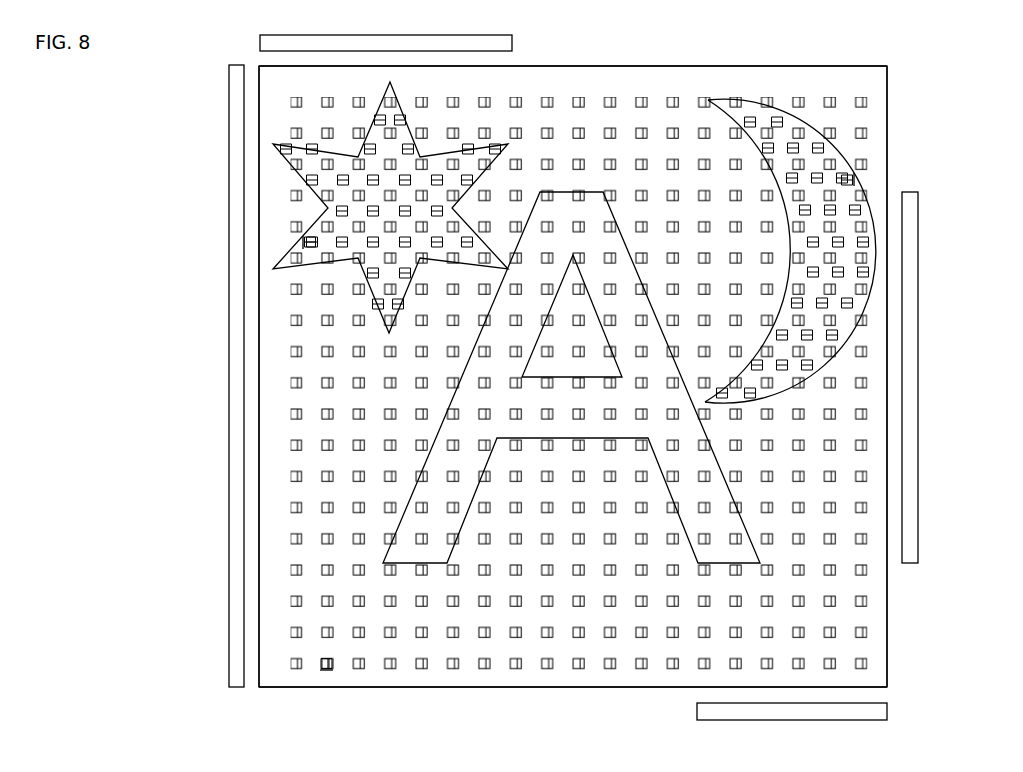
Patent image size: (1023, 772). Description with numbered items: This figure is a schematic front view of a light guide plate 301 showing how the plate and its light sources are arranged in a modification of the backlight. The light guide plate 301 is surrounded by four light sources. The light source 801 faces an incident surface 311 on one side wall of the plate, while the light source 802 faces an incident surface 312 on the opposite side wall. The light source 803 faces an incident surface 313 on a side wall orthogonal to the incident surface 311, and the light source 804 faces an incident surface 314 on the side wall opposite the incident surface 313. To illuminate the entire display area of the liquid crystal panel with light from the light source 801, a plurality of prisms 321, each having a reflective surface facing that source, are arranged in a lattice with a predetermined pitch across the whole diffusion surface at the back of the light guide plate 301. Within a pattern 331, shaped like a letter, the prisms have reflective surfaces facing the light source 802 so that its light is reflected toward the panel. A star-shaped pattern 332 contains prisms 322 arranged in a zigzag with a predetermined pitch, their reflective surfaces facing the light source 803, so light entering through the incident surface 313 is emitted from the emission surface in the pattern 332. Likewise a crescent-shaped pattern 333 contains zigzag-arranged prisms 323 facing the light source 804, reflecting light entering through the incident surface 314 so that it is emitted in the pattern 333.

The light guide plate 301 is at (887, 638).
The incident surface 311 is at (259, 681).
The incident surface 312 is at (888, 80).
The incident surface 313 is at (653, 66).
The incident surface 314 is at (514, 690).
The prisms 321 is at (327, 670).
The prisms 322 is at (304, 242).
The prisms 323 is at (852, 180).
The pattern 331 is at (698, 563).
The pattern 332 is at (298, 168).
The pattern 333 is at (840, 155).
The light source 801 is at (229, 672).
The light source 802 is at (918, 548).
The light source 803 is at (512, 43).
The light source 804 is at (887, 710).